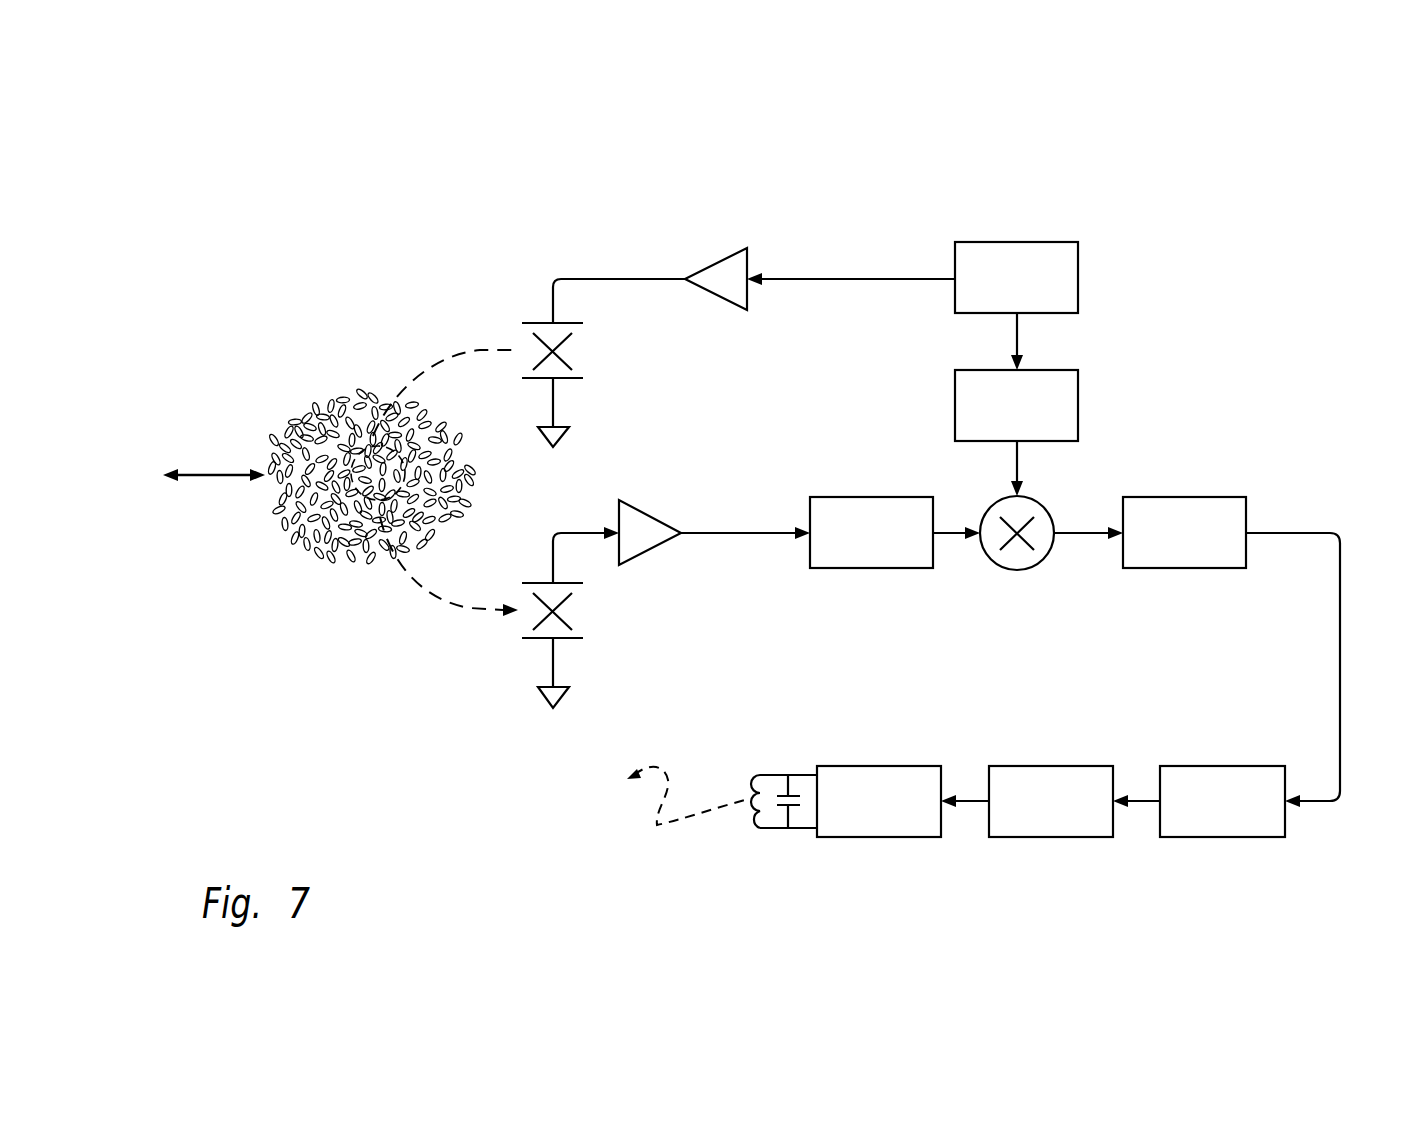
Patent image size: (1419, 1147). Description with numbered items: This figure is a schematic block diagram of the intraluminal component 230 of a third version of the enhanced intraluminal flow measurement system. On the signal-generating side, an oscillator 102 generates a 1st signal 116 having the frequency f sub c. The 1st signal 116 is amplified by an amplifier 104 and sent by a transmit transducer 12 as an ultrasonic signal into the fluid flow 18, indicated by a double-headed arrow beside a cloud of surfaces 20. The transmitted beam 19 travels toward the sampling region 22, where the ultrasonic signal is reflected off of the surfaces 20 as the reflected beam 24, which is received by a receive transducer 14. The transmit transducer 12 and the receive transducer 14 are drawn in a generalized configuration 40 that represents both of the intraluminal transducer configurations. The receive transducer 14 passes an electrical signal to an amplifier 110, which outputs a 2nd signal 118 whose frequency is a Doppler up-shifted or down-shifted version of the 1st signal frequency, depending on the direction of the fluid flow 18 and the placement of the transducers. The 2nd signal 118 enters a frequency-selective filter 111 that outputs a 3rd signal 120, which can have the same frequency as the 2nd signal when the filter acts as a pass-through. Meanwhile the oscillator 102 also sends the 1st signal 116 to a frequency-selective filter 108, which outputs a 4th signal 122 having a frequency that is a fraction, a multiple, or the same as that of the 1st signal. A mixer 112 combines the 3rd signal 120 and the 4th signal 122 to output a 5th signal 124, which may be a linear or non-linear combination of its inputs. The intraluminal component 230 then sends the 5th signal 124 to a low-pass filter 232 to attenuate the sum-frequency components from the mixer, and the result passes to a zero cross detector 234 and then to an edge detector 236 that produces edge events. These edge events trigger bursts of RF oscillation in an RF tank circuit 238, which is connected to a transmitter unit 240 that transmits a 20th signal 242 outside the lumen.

The intraluminal component 230 is at (1148, 148).
The generalized configuration 40 is at (294, 328).
The surfaces 20 is at (350, 400).
The sampling region 22 is at (392, 497).
The fluid flow 18 is at (213, 505).
The transmitted beam 19 is at (455, 355).
The reflected beam 24 is at (428, 600).
The transmit transducer 12 is at (574, 351).
The receive transducer 14 is at (574, 612).
The amplifier 104 is at (714, 258).
The oscillator 102 is at (984, 242).
The 1st signal 116 is at (822, 281).
The frequency-selective filter 108 is at (1078, 397).
The 4th signal 122 is at (1017, 463).
The amplifier 110 is at (656, 515).
The 2nd signal 118 is at (690, 530).
The frequency-selective filter 111 is at (838, 497).
The 3rd signal 120 is at (945, 537).
The mixer 112 is at (1013, 572).
The 5th signal 124 is at (1083, 537).
The low-pass filter 232 is at (1198, 570).
The zero cross detector 234 is at (1190, 838).
The edge detector 236 is at (1033, 838).
The RF tank circuit 238 is at (868, 838).
The transmitter unit 240 is at (759, 742).
The 20th signal 242 is at (660, 828).